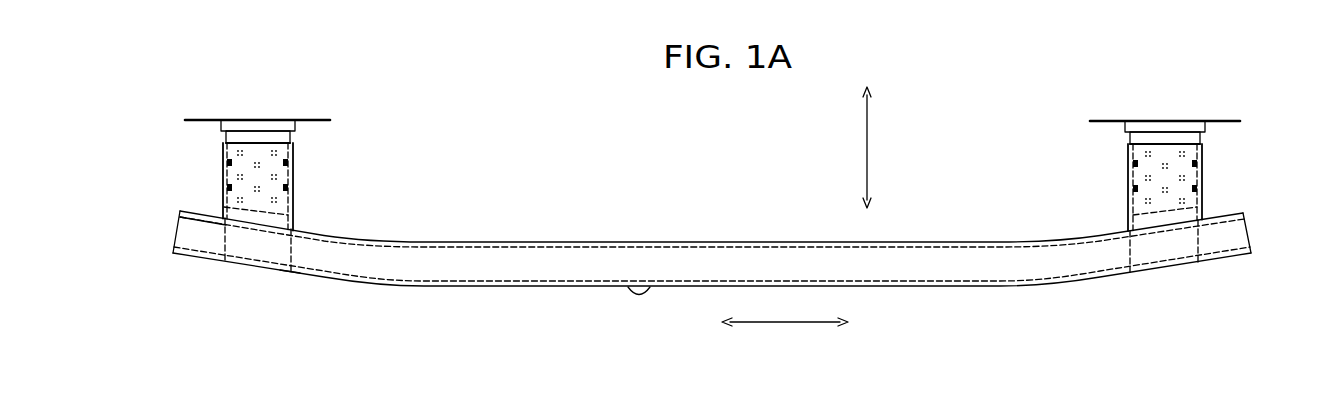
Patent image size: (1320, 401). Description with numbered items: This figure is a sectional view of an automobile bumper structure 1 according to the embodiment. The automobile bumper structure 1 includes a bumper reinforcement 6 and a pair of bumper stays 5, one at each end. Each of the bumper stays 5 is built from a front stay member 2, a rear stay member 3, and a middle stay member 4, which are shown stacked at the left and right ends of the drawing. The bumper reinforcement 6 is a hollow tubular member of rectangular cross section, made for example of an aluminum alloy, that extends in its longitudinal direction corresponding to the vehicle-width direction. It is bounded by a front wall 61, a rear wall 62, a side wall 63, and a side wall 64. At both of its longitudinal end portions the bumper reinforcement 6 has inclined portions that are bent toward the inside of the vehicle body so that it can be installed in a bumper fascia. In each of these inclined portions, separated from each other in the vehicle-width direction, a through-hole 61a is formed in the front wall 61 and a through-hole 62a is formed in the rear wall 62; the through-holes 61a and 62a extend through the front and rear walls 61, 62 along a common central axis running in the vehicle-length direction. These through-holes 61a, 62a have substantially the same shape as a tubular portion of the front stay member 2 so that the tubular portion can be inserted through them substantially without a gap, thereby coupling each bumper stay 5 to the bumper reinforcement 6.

The automobile bumper structure 1 is at (487, 112).
The front stay member 2 is at (300, 240).
The rear stay member 3 is at (296, 123).
The middle stay member 4 is at (225, 160).
The bumper stay 5 is at (360, 123).
The bumper reinforcement 6 is at (795, 170).
The front wall 61 is at (627, 285).
The rear wall 62 is at (660, 242).
The side wall 63 is at (708, 258).
The side wall 64 is at (770, 268).
The through-hole 61a is at (284, 272).
The through-hole 62a is at (226, 228).